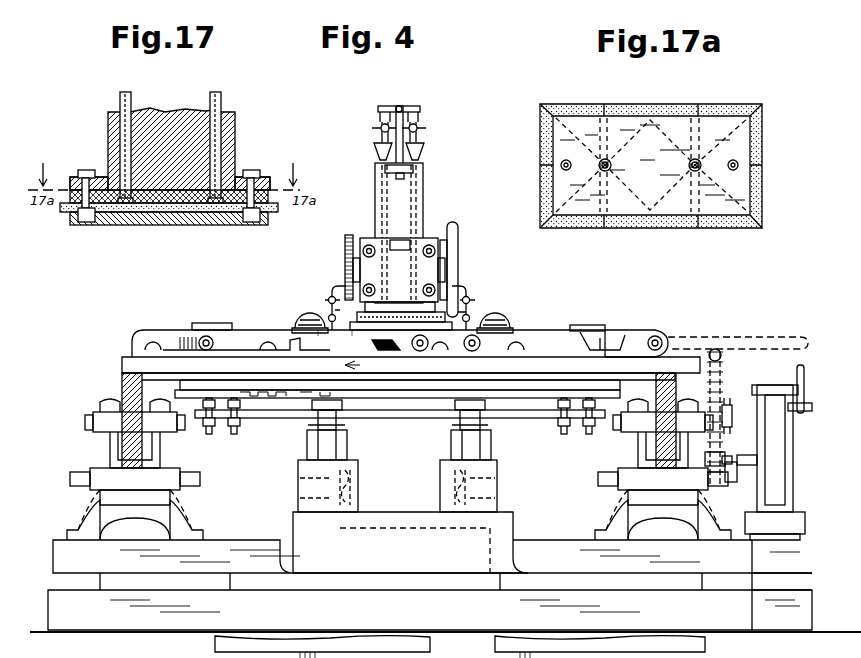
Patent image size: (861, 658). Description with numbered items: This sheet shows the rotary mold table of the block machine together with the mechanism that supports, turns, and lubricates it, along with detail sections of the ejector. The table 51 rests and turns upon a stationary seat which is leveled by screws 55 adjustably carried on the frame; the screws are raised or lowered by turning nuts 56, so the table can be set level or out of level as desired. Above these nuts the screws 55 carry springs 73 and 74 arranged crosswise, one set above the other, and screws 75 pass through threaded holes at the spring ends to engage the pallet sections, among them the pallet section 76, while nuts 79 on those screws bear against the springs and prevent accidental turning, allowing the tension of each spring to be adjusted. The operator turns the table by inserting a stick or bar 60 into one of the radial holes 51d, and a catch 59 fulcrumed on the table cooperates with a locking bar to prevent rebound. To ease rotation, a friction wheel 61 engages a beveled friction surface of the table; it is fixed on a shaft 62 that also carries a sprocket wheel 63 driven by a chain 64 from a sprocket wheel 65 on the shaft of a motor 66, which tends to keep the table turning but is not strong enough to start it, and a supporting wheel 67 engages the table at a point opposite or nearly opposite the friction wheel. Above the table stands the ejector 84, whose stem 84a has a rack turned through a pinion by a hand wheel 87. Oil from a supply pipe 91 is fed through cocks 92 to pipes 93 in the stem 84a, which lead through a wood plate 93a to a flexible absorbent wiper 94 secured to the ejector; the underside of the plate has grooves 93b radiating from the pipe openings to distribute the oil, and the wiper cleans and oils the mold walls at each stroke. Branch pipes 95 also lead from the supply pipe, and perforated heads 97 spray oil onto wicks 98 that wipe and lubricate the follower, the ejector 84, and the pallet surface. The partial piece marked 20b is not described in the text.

In FIG. 17, the stem 84a is at (172, 130).
In FIG. 4, the stem 84a is at (399, 233).
In FIG. 17, the pipes 93 is at (122, 100).
In FIG. 17A, the pipes 93 is at (690, 162).
In FIG. 4, the pipes 93 is at (375, 193).
In FIG. 17, the wood plate 93a is at (274, 195).
In FIG. 17A, the wood plate 93a is at (566, 183).
In FIG. 17A, the grooves 93b is at (760, 193).
In FIG. 17, the wiper 94 is at (68, 212).
In FIG. 17A, the wiper 94 is at (628, 228).
In FIG. 4, the wiper 94 is at (349, 343).
In FIG. 17, the ejector 84 is at (180, 225).
In FIG. 4, the supply pipe 91 is at (400, 106).
In FIG. 4, the cocks 92 is at (374, 129).
In FIG. 4, the hand wheel 87 is at (459, 242).
In FIG. 4, the branch pipes 95 is at (350, 294).
In FIG. 4, the perforated heads 97 is at (306, 313).
In FIG. 4, the wicks 98 is at (317, 343).
In FIG. 4, the table 51 is at (580, 365).
In FIG. 4, the radial holes 51d is at (205, 338).
In FIG. 4, the catch 59 is at (622, 330).
In FIG. 4, the stick or bar 60 is at (772, 340).
In FIG. 4, the supporting wheel 67 is at (121, 386).
In FIG. 4, the pallet section 76 is at (192, 392).
In FIG. 4, the spring 73 is at (382, 408).
In FIG. 4, the nuts 79 is at (242, 416).
In FIG. 4, the screws 75 is at (234, 428).
In FIG. 4, the spring 74 is at (488, 412).
In FIG. 4, the nuts 56 is at (492, 444).
In FIG. 4, the screws 55 is at (310, 486).
In FIG. 4, the friction wheel 61 is at (645, 428).
In FIG. 4, the sprocket wheel 63 is at (724, 368).
In FIG. 4, the shaft 62 is at (733, 415).
In FIG. 4, the chain 64 is at (726, 456).
In FIG. 4, the sprocket wheel 65 is at (727, 478).
In FIG. 4, the motor 66 is at (783, 462).
In FIG. 4, the conveyor plate 20b is at (695, 642).